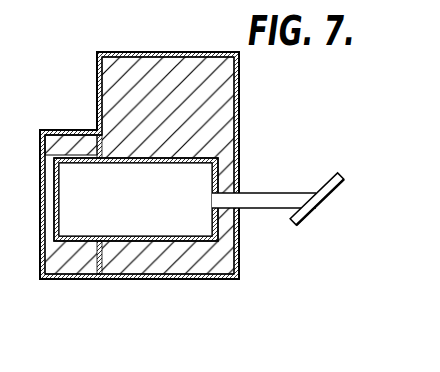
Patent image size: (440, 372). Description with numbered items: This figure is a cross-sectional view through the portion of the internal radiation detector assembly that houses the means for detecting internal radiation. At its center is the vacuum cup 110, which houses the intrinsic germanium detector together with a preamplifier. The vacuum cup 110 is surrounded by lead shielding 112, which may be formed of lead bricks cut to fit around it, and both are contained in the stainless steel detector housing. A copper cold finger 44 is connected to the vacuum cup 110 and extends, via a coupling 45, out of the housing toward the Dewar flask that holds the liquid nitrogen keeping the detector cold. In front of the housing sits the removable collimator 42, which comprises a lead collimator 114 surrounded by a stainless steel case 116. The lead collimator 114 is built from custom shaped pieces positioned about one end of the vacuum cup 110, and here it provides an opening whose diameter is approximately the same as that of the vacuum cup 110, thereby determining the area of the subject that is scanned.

The collimator 42 is at (76, 118).
The cold finger 44 is at (265, 168).
The coupling 45 is at (317, 180).
The vacuum cup 110 is at (237, 132).
The lead shielding 112 is at (216, 88).
The lead collimator 114 is at (56, 265).
The stainless steel case 116 is at (43, 268).